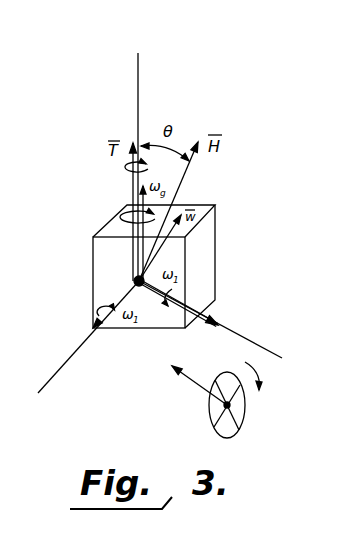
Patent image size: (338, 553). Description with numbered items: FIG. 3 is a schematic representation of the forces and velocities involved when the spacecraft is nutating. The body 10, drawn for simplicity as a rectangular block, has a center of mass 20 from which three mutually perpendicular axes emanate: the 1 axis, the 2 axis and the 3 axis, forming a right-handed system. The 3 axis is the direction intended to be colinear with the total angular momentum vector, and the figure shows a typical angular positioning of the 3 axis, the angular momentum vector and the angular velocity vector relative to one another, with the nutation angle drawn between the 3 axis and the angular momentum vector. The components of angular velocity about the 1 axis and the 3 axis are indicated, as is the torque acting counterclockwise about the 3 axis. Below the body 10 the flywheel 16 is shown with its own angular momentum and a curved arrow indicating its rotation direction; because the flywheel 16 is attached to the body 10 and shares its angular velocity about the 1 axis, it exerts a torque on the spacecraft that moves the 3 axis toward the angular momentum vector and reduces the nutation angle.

The 1 axis 1 is at (56, 368).
The 2 axis 2 is at (300, 356).
The 3 axis 3 is at (139, 72).
The body 10 is at (216, 241).
The flywheel 16 is at (243, 425).
The center of mass 20 is at (135, 282).